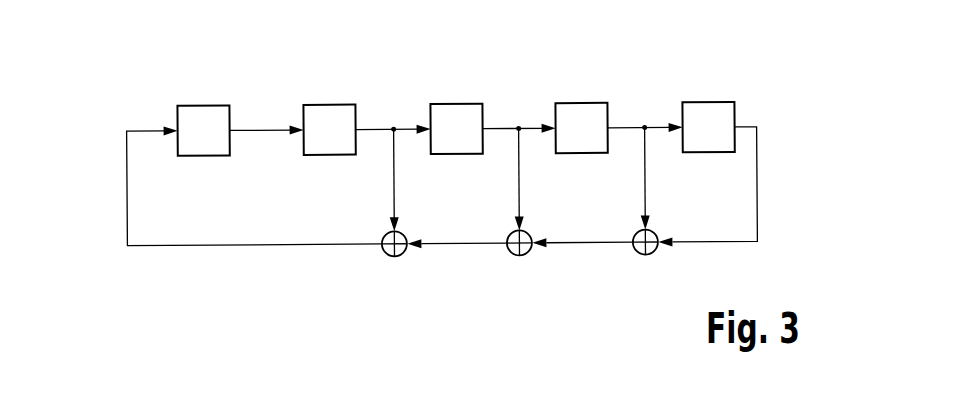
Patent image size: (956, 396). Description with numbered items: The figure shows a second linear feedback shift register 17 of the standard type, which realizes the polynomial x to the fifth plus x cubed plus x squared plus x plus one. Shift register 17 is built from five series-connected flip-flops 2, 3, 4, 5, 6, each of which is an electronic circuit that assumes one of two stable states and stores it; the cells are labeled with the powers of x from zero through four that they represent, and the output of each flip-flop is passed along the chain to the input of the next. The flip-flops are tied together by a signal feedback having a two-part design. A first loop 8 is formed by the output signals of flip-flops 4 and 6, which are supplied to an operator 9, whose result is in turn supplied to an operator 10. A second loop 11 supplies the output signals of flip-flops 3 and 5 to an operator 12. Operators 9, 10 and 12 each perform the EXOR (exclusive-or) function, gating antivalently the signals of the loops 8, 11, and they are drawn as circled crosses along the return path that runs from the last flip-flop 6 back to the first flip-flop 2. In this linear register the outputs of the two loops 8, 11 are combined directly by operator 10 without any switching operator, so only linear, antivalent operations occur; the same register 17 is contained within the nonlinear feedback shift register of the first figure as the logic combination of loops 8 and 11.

The second linear feedback shift register 17 is at (109, 77).
The flip-flop 2 is at (204, 104).
The flip-flop 3 is at (330, 104).
The flip-flop 4 is at (457, 104).
The flip-flop 5 is at (582, 104).
The flip-flop 6 is at (709, 104).
The first loop 8 is at (442, 186).
The second loop 11 is at (757, 207).
The operator 10 is at (394, 256).
The operator 9 is at (519, 256).
The operator 12 is at (645, 256).